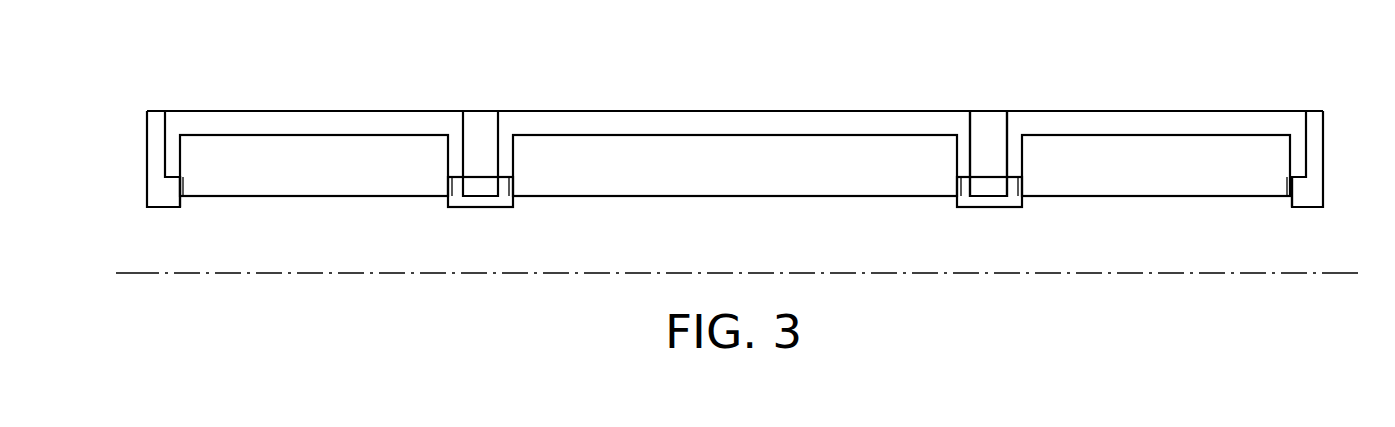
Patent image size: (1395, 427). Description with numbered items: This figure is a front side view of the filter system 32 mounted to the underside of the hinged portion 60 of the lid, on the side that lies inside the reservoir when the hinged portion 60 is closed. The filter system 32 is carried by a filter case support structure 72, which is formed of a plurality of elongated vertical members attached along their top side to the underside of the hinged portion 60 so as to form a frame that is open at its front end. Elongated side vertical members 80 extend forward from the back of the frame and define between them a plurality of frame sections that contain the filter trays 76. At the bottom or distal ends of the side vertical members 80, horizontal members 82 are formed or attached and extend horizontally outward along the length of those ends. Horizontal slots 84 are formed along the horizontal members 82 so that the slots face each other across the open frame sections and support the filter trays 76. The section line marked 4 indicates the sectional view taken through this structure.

The filter system 32 is at (314, 65).
The hinged portion 60 is at (705, 111).
The filter case support structure 72 is at (1015, 122).
The filter tray 76 is at (338, 197).
The elongated side vertical member 80 is at (167, 122).
The horizontal member 82 is at (163, 209).
The horizontal slot 84 is at (461, 204).
The section line 4- 4 is at (116, 273).